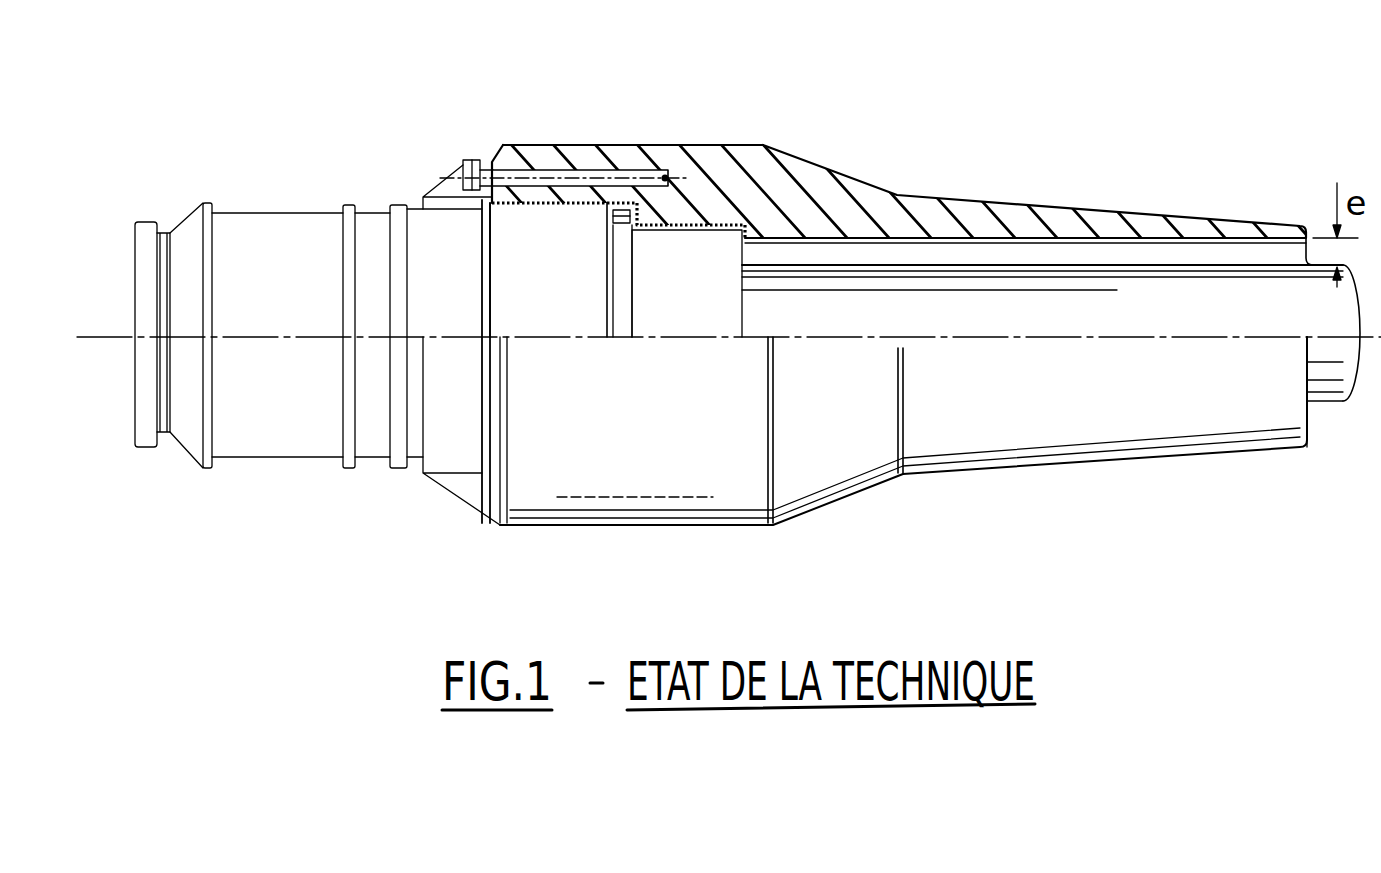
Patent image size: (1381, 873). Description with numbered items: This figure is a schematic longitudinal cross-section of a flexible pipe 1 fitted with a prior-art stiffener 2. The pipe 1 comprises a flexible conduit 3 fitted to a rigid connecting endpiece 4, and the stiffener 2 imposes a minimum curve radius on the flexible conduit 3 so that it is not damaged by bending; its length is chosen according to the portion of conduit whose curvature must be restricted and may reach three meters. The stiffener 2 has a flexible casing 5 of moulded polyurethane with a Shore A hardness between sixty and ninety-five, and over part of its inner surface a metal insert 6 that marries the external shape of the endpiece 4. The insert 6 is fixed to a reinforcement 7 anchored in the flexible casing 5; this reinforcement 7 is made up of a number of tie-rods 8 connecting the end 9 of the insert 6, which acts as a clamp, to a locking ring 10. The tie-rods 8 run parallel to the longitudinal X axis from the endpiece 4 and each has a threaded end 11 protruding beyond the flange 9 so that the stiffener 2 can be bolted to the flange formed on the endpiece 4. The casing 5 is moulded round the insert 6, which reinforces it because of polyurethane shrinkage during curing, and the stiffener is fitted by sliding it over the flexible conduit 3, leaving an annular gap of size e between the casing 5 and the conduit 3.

The pipe 1 is at (268, 255).
The stiffener 2 is at (712, 183).
The flexible conduit 3 is at (940, 290).
The rigid connecting endpiece 4 is at (282, 427).
The flexible casing 5 is at (513, 147).
The metal insert 6 is at (548, 208).
The reinforcement 7 is at (553, 147).
The tie-rods 8 is at (628, 147).
The end of the insert 9 is at (490, 147).
The locking ring 10 is at (666, 176).
The threaded end 11 is at (463, 175).